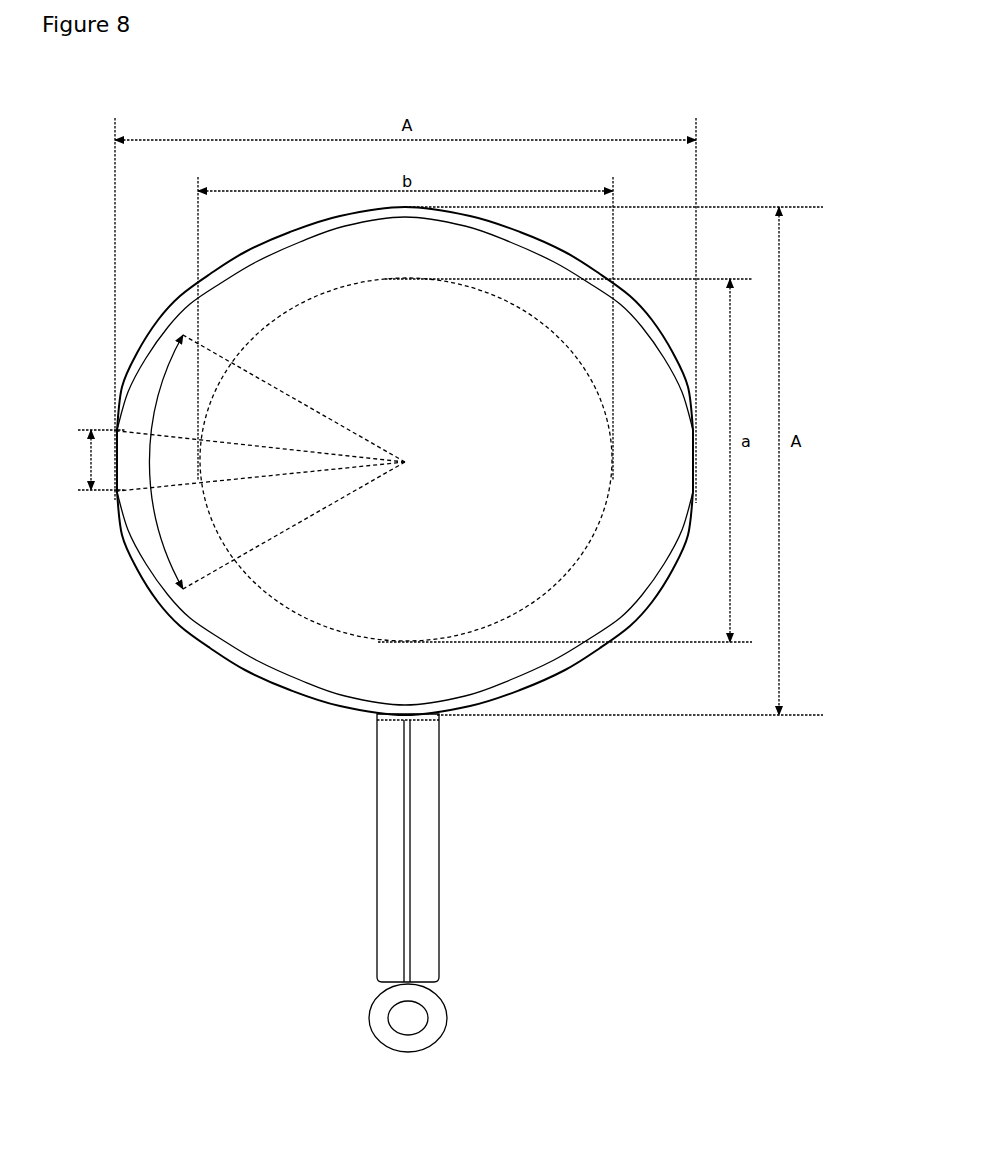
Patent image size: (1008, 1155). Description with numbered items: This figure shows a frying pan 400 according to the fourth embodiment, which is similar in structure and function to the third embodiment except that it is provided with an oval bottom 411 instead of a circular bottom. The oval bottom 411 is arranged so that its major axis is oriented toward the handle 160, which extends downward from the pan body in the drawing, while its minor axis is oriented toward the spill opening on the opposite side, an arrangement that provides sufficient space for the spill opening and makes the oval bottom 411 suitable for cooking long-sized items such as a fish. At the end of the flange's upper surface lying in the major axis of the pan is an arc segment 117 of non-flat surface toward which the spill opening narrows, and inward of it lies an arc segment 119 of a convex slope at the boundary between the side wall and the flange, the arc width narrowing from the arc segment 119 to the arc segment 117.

The frying pan 400 is at (430, 98).
The arc segment 117 is at (375, 461).
The arc segment 119 is at (166, 462).
The oval bottom 411 is at (343, 600).
The handle 160 is at (377, 846).